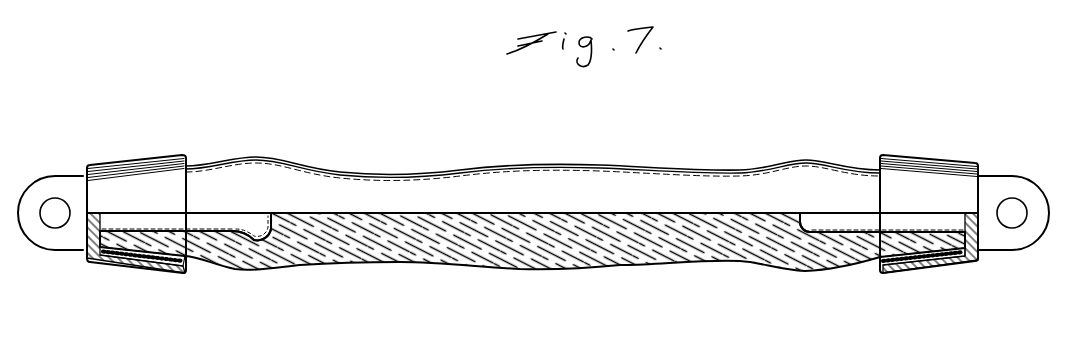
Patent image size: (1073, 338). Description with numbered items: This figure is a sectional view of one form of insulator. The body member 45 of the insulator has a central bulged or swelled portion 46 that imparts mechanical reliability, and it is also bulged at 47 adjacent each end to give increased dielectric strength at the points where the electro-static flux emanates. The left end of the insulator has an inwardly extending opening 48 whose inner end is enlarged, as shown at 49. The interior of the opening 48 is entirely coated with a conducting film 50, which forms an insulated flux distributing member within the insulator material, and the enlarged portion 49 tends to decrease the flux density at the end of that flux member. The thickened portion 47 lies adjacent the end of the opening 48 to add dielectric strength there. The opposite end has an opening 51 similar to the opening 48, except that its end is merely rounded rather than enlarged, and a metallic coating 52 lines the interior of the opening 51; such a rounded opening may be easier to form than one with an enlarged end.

The body member 45 is at (467, 243).
The central bulged portion 46 is at (559, 172).
The bulged portion adjacent each end 47 is at (806, 160).
The inwardly extending opening 48 is at (186, 221).
The enlarged portion 49 is at (260, 222).
The conducting film 50 is at (210, 224).
The opening 51 is at (907, 220).
The metallic coating 52 is at (850, 226).